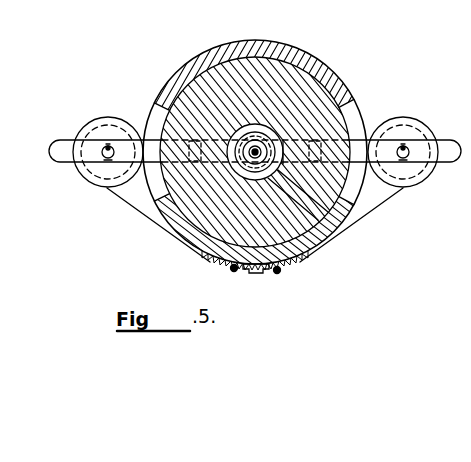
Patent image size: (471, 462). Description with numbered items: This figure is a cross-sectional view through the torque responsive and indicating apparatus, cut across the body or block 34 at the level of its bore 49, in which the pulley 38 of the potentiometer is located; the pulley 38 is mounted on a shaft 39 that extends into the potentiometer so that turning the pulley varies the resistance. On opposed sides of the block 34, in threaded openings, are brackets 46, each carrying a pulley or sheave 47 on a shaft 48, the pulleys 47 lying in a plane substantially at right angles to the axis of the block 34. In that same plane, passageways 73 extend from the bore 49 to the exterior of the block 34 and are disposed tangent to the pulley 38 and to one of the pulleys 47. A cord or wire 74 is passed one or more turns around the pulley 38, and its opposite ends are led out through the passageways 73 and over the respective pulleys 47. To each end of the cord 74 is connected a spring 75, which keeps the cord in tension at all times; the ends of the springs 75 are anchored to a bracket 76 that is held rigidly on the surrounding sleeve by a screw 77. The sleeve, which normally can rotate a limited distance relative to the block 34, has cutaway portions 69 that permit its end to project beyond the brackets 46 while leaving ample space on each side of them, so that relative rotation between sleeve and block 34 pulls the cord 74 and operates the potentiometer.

The body or block 34 is at (295, 68).
The pulley 38 is at (330, 215).
The shaft 39 is at (254, 151).
The brackets 46 is at (63, 162).
The pulley or sheave 47 is at (98, 120).
The shaft 48 is at (110, 146).
The bore 49 is at (318, 243).
The cutaway portions 69 is at (358, 110).
The passageways 73 is at (342, 77).
The cord or wire 74 is at (372, 210).
The spring 75 is at (290, 265).
The bracket 76 is at (275, 273).
The screw 77 is at (256, 272).